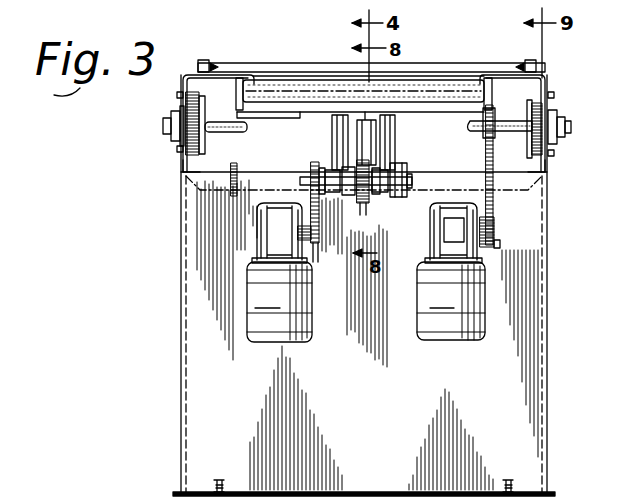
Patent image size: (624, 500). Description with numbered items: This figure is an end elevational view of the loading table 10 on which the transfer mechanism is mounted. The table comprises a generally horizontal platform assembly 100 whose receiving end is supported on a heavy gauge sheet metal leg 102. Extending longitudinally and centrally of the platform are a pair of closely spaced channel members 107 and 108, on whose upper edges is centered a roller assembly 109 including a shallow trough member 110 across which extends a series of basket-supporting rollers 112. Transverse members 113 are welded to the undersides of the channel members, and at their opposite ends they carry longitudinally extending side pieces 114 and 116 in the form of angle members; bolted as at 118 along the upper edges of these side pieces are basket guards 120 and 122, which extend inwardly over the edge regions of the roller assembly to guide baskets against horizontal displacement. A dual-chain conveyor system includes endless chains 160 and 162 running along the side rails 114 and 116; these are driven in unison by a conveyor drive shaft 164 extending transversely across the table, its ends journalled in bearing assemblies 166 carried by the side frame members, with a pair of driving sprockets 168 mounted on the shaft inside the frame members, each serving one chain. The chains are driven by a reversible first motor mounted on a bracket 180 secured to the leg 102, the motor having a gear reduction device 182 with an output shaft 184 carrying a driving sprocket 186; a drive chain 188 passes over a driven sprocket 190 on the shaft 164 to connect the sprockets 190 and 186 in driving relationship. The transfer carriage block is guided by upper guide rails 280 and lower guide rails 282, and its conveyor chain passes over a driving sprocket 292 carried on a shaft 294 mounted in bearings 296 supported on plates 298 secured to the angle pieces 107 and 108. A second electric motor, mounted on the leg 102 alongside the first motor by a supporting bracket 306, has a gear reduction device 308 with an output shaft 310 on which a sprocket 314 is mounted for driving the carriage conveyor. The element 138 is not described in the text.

The loading table 10 is at (285, 62).
The platform assembly 100 is at (554, 81).
The leg 102 is at (398, 424).
The channel member 107 is at (345, 150).
The channel member 108 is at (391, 145).
The roller assembly 109 is at (422, 101).
The trough member 110 is at (292, 120).
The basket-supporting rollers 112 is at (320, 80).
The transverse members 113 is at (206, 201).
The side piece 114 is at (182, 163).
The side piece 116 is at (548, 163).
The bolts 118 is at (176, 96).
The basket guard 120 is at (190, 74).
The basket guard 122 is at (550, 77).
The mounting block 138 is at (203, 62).
The endless chain 160 is at (197, 110).
The endless chain 162 is at (556, 112).
The conveyor drive shaft 164 is at (228, 134).
The bearing assemblies 166 is at (170, 139).
The driving sprockets 168 is at (208, 130).
The bracket 180 is at (430, 248).
The gear reduction device 182 is at (440, 229).
The output shaft 184 is at (495, 232).
The driving sprocket 186 is at (500, 246).
The drive chain 188 is at (485, 166).
The driven sprocket 190 is at (496, 110).
The upper guide rails 280 is at (358, 116).
The lower guide rails 282 is at (350, 165).
The driving sprocket 292 is at (368, 205).
The shaft 294 is at (378, 197).
The bearings 296 is at (400, 172).
The plates 298 is at (388, 195).
The supporting bracket 306 is at (262, 218).
The gear reduction device 308 is at (270, 232).
The output shaft 310 is at (310, 190).
The sprocket 314 is at (318, 264).